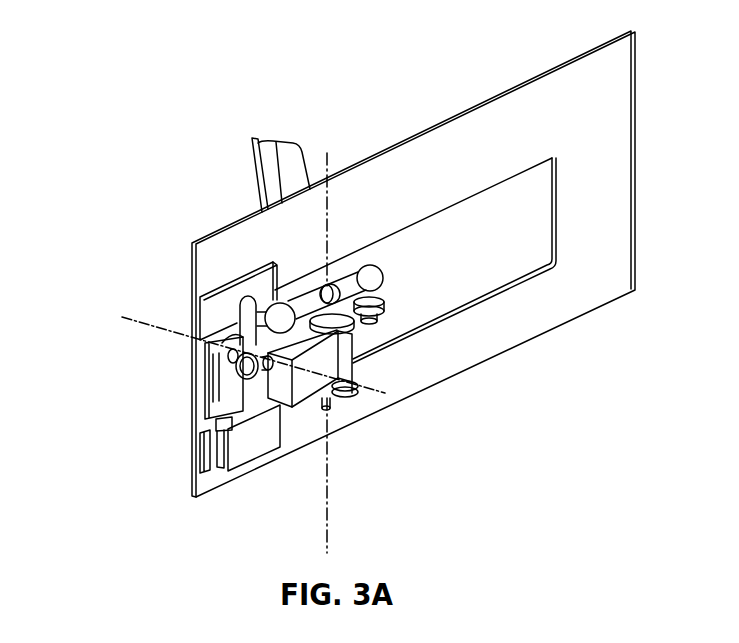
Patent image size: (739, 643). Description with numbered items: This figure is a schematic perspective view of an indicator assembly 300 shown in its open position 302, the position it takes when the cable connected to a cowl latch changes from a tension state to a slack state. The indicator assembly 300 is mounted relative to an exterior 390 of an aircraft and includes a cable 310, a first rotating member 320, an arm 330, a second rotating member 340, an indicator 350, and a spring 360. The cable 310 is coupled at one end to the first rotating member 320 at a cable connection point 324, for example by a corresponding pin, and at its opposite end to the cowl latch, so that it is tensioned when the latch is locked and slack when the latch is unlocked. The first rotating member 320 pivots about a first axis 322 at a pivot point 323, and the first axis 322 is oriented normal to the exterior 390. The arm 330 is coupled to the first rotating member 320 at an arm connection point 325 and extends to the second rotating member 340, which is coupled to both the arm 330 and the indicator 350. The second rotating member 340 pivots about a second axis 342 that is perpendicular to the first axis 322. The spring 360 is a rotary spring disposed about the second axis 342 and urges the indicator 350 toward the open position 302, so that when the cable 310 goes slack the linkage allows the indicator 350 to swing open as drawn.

The indicator assembly 300 is at (146, 82).
The open position 302 is at (324, 128).
The cable 310 is at (223, 467).
The first rotating member 320 is at (240, 330).
The first axis 322 is at (147, 327).
The pivot point 323 is at (298, 405).
The cable connection point 324 is at (225, 355).
The arm connection point 325 is at (262, 282).
The arm 330 is at (343, 270).
The second rotating member 340 is at (385, 307).
The second axis 342 is at (330, 523).
The indicator 350 is at (270, 143).
The spring 360 is at (383, 391).
The exterior 390 is at (198, 210).